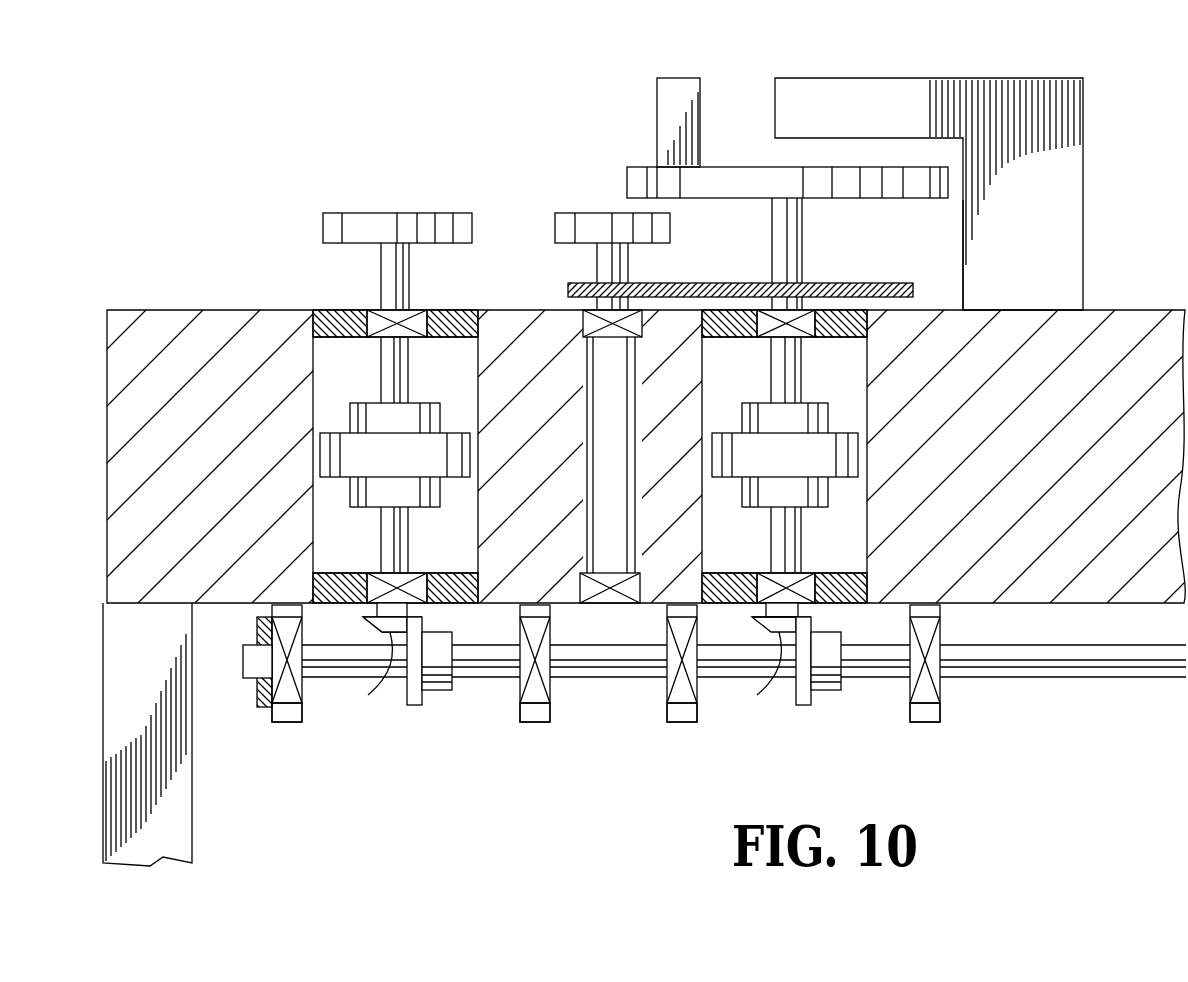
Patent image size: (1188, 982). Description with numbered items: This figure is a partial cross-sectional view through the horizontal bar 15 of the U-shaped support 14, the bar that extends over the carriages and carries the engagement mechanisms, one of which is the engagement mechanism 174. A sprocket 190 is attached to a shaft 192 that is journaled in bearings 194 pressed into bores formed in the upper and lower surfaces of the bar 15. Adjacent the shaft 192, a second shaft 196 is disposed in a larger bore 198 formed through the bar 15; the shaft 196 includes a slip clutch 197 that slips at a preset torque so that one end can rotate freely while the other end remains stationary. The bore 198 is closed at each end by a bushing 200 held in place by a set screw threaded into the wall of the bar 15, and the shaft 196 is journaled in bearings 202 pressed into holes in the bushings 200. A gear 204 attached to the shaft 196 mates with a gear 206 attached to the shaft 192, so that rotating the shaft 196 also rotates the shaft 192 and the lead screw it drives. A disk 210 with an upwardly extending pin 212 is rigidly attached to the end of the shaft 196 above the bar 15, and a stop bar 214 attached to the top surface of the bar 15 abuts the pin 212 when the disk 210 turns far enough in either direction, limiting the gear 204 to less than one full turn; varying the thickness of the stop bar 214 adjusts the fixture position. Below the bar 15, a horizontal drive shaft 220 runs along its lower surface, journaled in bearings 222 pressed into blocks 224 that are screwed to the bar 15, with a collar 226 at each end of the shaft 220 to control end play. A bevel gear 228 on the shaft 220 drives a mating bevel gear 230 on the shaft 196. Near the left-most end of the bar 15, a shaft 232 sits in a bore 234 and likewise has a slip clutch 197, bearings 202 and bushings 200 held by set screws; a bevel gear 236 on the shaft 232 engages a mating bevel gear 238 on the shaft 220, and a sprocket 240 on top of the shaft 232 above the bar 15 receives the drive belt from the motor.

The U-shaped support 14 is at (116, 697).
The horizontal bar 15 is at (1145, 308).
The engagement mechanism 174 is at (1036, 73).
The sprocket 190 is at (577, 212).
The shaft 192 is at (615, 437).
The bearings 194 is at (590, 322).
The second shaft 196 is at (792, 372).
The slip clutch 197 is at (378, 469).
The bore 198 is at (866, 497).
The bushing 200 is at (442, 308).
The bearings 202 is at (382, 322).
The gear 204 is at (748, 281).
The gear 206 is at (648, 282).
The disk 210 is at (722, 168).
The pin 212 is at (665, 130).
The stop bar 214 is at (1047, 183).
The horizontal drive shaft 220 is at (1082, 685).
The bearings 222 is at (303, 690).
The blocks 224 is at (287, 722).
The collar 226 is at (262, 695).
The bevel gear 228 is at (822, 697).
The bevel gear 230 is at (772, 655).
The shaft 232 is at (400, 372).
The bore 234 is at (472, 500).
The bevel gear 236 is at (381, 655).
The bevel gear 238 is at (413, 700).
The sprocket 240 is at (415, 212).